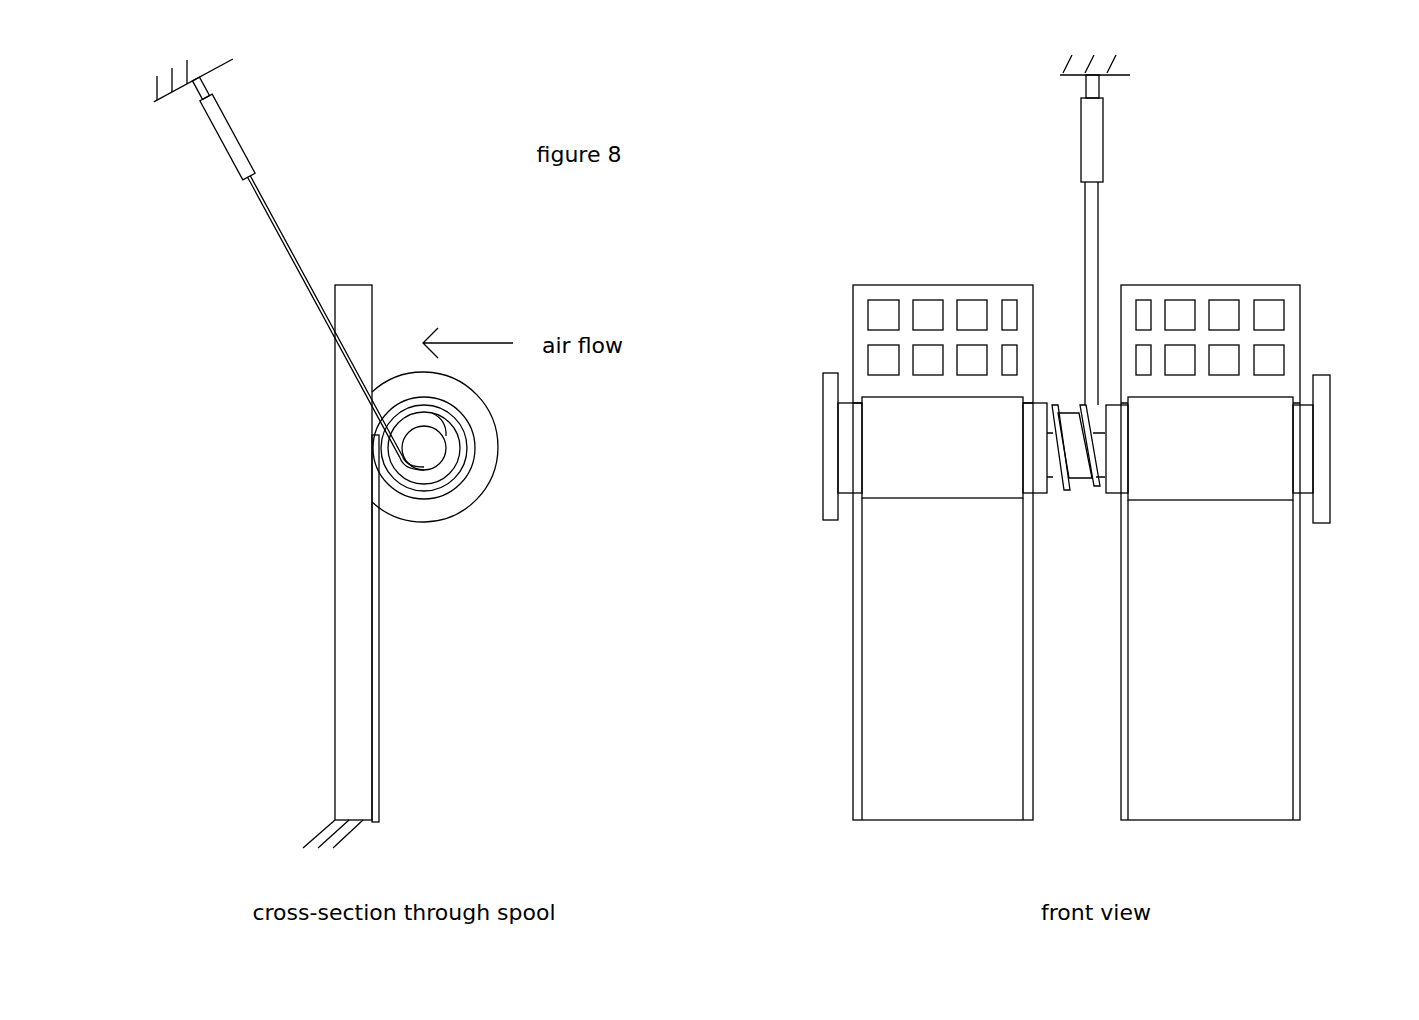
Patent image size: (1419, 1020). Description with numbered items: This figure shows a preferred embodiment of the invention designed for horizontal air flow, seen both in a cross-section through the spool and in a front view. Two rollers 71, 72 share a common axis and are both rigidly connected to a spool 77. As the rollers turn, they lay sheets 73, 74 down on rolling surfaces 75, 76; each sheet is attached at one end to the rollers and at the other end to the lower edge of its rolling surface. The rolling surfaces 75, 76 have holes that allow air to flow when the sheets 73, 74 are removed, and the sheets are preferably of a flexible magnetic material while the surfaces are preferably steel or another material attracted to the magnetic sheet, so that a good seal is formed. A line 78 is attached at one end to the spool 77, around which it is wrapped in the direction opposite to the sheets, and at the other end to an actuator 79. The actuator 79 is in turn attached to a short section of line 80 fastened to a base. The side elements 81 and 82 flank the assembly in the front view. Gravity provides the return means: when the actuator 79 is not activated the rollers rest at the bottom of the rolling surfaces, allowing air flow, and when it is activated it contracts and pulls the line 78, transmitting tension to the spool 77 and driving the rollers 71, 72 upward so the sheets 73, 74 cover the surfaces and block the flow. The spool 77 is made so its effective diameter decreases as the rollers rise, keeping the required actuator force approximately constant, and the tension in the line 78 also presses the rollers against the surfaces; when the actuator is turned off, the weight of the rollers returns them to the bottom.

The roller 71 is at (1035, 480).
The roller 72 is at (1115, 465).
The sheet 73 is at (942, 608).
The sheet 74 is at (418, 497).
The rolling surface 75 is at (938, 292).
The rolling surface 76 is at (358, 297).
The spool 77 is at (423, 453).
The line 78 is at (287, 250).
The actuator 79 is at (232, 142).
The line 80 is at (193, 94).
The side bar 81 is at (833, 457).
The side bar / spool housing 82 is at (492, 455).